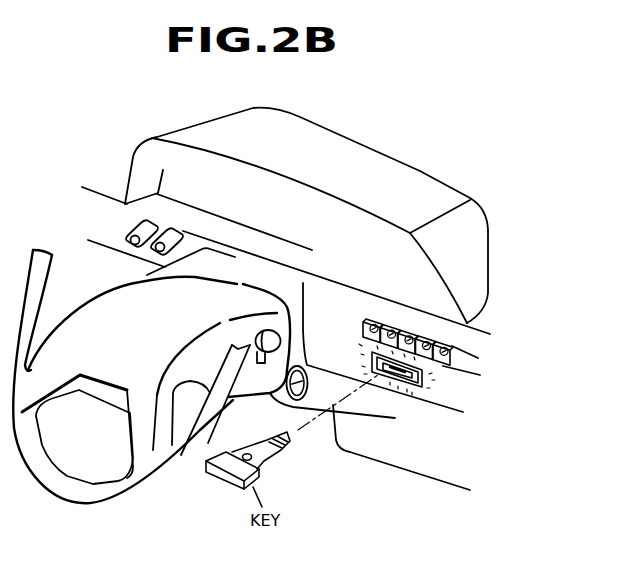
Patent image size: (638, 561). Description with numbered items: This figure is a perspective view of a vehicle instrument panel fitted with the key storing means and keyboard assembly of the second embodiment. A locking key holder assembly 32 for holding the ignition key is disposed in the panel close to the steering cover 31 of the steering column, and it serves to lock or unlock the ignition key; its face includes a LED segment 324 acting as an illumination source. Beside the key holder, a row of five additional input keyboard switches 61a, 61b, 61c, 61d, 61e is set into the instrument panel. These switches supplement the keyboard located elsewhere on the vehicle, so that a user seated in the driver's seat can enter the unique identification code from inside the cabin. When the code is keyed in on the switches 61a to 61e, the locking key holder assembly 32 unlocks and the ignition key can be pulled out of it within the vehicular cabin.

The steering cover 31 is at (282, 378).
The locking key holder assembly 32 is at (419, 387).
The LED segment 324 is at (428, 383).
The input keyboard switch 61a is at (372, 321).
The input keyboard switch 61b is at (394, 327).
The input keyboard switch 61c is at (412, 333).
The input keyboard switch 61d is at (430, 339).
The input keyboard switch 61e is at (450, 345).